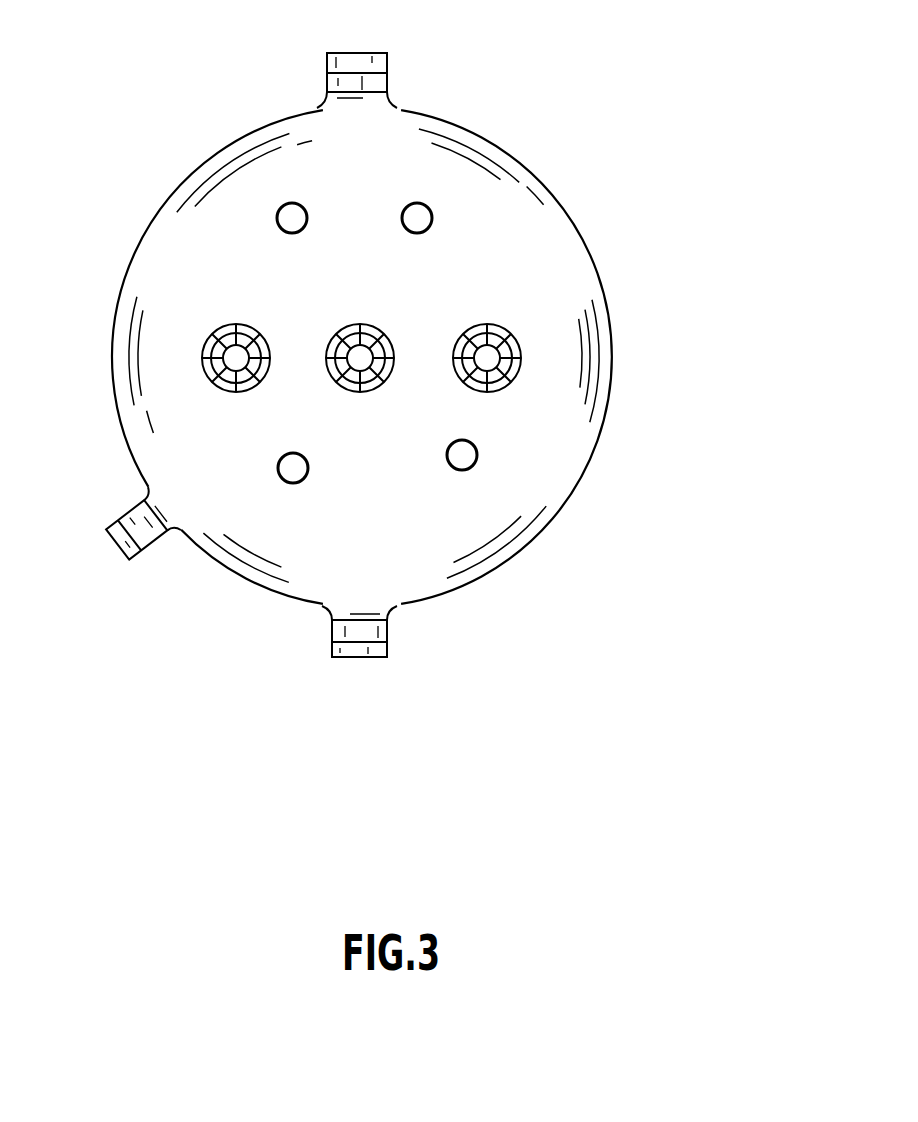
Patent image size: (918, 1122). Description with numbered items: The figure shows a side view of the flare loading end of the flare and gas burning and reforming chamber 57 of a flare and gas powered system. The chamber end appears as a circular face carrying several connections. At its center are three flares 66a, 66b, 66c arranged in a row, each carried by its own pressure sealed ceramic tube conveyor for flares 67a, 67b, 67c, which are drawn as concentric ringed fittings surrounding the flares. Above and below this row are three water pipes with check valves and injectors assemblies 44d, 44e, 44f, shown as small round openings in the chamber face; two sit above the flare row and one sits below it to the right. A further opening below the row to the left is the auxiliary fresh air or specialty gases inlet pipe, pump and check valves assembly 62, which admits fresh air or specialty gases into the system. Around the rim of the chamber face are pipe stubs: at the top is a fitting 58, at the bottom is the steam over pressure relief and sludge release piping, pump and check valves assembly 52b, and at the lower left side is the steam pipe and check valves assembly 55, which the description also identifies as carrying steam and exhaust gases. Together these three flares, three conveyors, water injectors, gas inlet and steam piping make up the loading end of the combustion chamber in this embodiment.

The flare and gas burning and reforming chamber 57 is at (297, 108).
The top port nozzle 58 is at (392, 57).
The steam over pressure relief and sludge release piping, pump and check valves asse 52b is at (365, 660).
The steam pipe and check valves assembly 55 is at (117, 552).
The water pipe with check valve and injector assembly 44d is at (278, 200).
The water pipe with check valve and injector assembly 44e is at (483, 457).
The water pipe with check valve and injector assembly 44f is at (428, 200).
The auxiliary fresh air or specialty gases inlet pipe, pump and check valves assembl 62 is at (277, 487).
The flare 66a is at (236, 358).
The flare 66b is at (358, 358).
The flare 66c is at (487, 358).
The pressure sealed ceramic tube conveyor for flares 67a is at (223, 316).
The pressure sealed ceramic tube conveyor for flares 67b is at (383, 320).
The pressure sealed ceramic tube conveyor for flares 67c is at (505, 392).